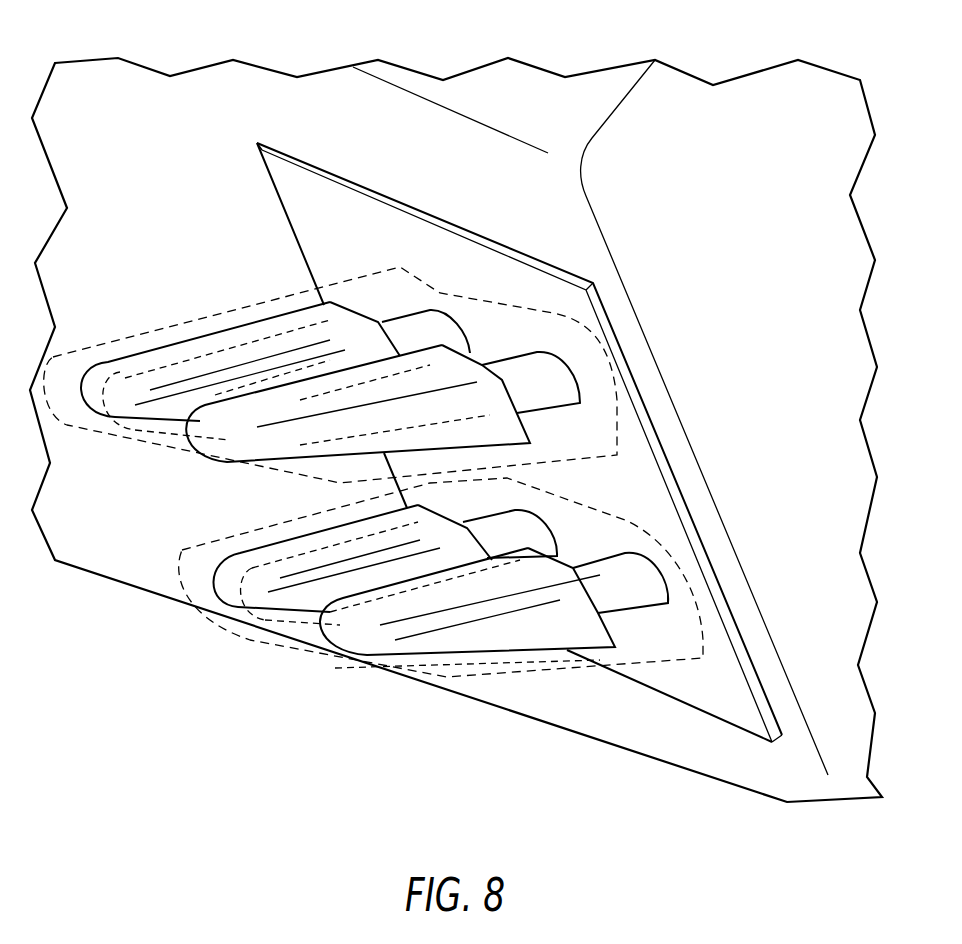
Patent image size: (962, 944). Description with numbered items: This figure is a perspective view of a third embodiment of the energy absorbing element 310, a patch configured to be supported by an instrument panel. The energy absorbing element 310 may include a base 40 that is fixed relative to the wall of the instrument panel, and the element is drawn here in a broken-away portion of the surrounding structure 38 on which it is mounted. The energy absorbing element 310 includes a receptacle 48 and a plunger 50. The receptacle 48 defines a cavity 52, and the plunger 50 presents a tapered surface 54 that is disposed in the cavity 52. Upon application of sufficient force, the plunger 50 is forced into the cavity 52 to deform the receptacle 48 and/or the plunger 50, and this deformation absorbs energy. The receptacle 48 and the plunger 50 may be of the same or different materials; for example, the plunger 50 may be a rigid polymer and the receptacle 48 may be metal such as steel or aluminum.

The housing body 38 is at (368, 168).
The base 40 is at (725, 698).
The receptacle 48 is at (182, 430).
The plunger 50 is at (520, 367).
The cavity 52 is at (227, 473).
The tapered surface 54 is at (240, 360).
The energy absorbing element 310 is at (98, 674).